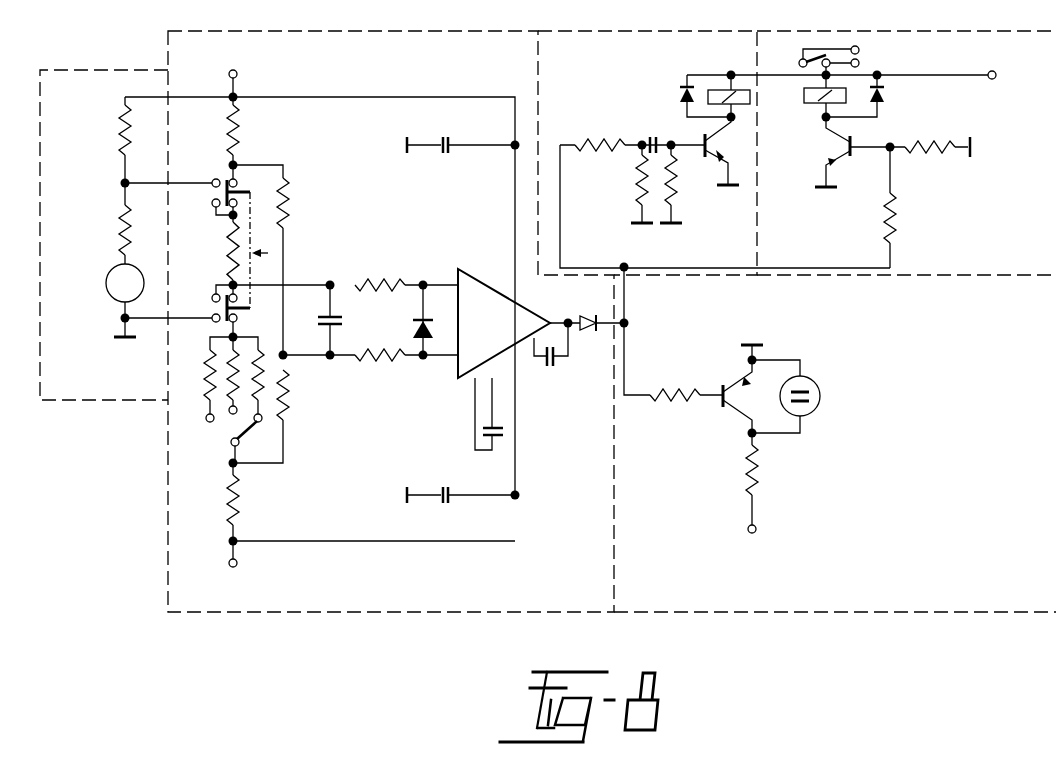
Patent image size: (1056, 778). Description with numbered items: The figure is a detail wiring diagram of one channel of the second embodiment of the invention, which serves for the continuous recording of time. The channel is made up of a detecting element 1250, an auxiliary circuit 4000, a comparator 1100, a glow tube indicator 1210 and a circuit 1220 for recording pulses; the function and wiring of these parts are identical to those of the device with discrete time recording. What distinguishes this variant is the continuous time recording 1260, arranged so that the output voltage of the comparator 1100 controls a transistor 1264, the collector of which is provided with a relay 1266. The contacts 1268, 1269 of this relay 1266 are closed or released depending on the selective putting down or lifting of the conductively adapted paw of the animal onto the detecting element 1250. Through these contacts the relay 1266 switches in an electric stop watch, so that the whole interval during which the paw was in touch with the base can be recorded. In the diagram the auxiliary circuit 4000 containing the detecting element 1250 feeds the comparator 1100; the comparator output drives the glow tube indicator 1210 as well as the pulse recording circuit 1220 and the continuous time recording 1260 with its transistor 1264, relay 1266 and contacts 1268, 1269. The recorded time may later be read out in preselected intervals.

The auxiliary circuit 4000 is at (126, 225).
The comparator 1100 is at (374, 311).
The circuit for a recording of pulses 1220 is at (767, 142).
The continuous time recording 1260 is at (906, 142).
The glow tube indicator 1210 is at (835, 440).
The detecting element 1250 is at (223, 250).
The transistor 1264 is at (809, 152).
The relay 1266 is at (805, 101).
The contact 1268 is at (856, 53).
The contact 1269 is at (867, 64).